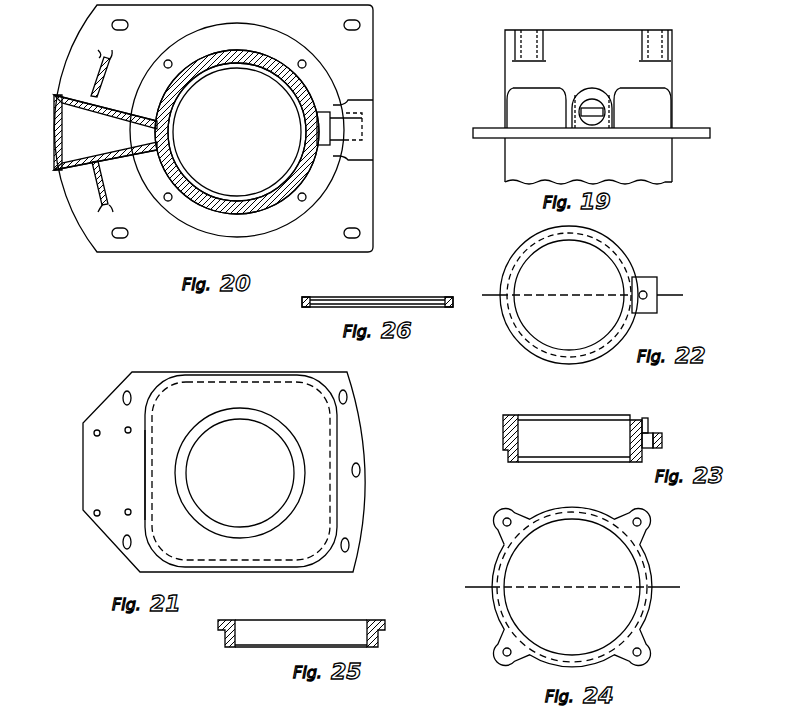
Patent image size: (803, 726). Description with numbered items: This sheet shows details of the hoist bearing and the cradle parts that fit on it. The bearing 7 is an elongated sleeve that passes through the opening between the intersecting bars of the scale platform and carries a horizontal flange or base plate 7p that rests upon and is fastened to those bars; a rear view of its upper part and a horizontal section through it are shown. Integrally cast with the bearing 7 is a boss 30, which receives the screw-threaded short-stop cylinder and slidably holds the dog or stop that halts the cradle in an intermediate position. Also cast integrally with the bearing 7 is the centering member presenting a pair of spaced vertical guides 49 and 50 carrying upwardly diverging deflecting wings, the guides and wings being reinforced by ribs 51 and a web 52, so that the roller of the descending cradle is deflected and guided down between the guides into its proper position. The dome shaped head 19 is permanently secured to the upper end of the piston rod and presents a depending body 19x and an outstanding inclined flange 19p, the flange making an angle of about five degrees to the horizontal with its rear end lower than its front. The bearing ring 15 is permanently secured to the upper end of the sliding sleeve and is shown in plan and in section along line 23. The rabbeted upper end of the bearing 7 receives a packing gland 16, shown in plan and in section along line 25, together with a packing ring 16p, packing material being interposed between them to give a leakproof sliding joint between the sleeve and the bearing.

In FIG. 20, the bearing 7 is at (279, 62).
In FIG. 19, the bearing 7 is at (512, 160).
In FIG. 20, the horizontal flange or base plate 7p is at (360, 74).
In FIG. 19, the horizontal flange or base plate 7p is at (473, 128).
In FIG. 20, the boss 30 is at (350, 110).
In FIG. 19, the boss 30 is at (578, 104).
In FIG. 20, the vertical guide 49 is at (84, 96).
In FIG. 20, the vertical guide 50 is at (68, 168).
In FIG. 20, the ribs 51 is at (108, 80).
In FIG. 20, the web 52 is at (62, 132).
In FIG. 22, the bearing ring 15 is at (629, 258).
In FIG. 23, the bearing ring 15 is at (593, 422).
In FIG. 24, the packing gland 16 is at (645, 550).
In FIG. 25, the packing gland 16 is at (326, 622).
In FIG. 26, the packing ring 16p is at (414, 290).
In FIG. 21, the dome shaped head 19 is at (248, 388).
In FIG. 21, the outstanding inclined flange 19p is at (158, 378).
In FIG. 21, the depending body 19x is at (146, 465).
In FIG. 22, the section line 23 is at (580, 285).
In FIG. 24, the section line 25 is at (574, 578).